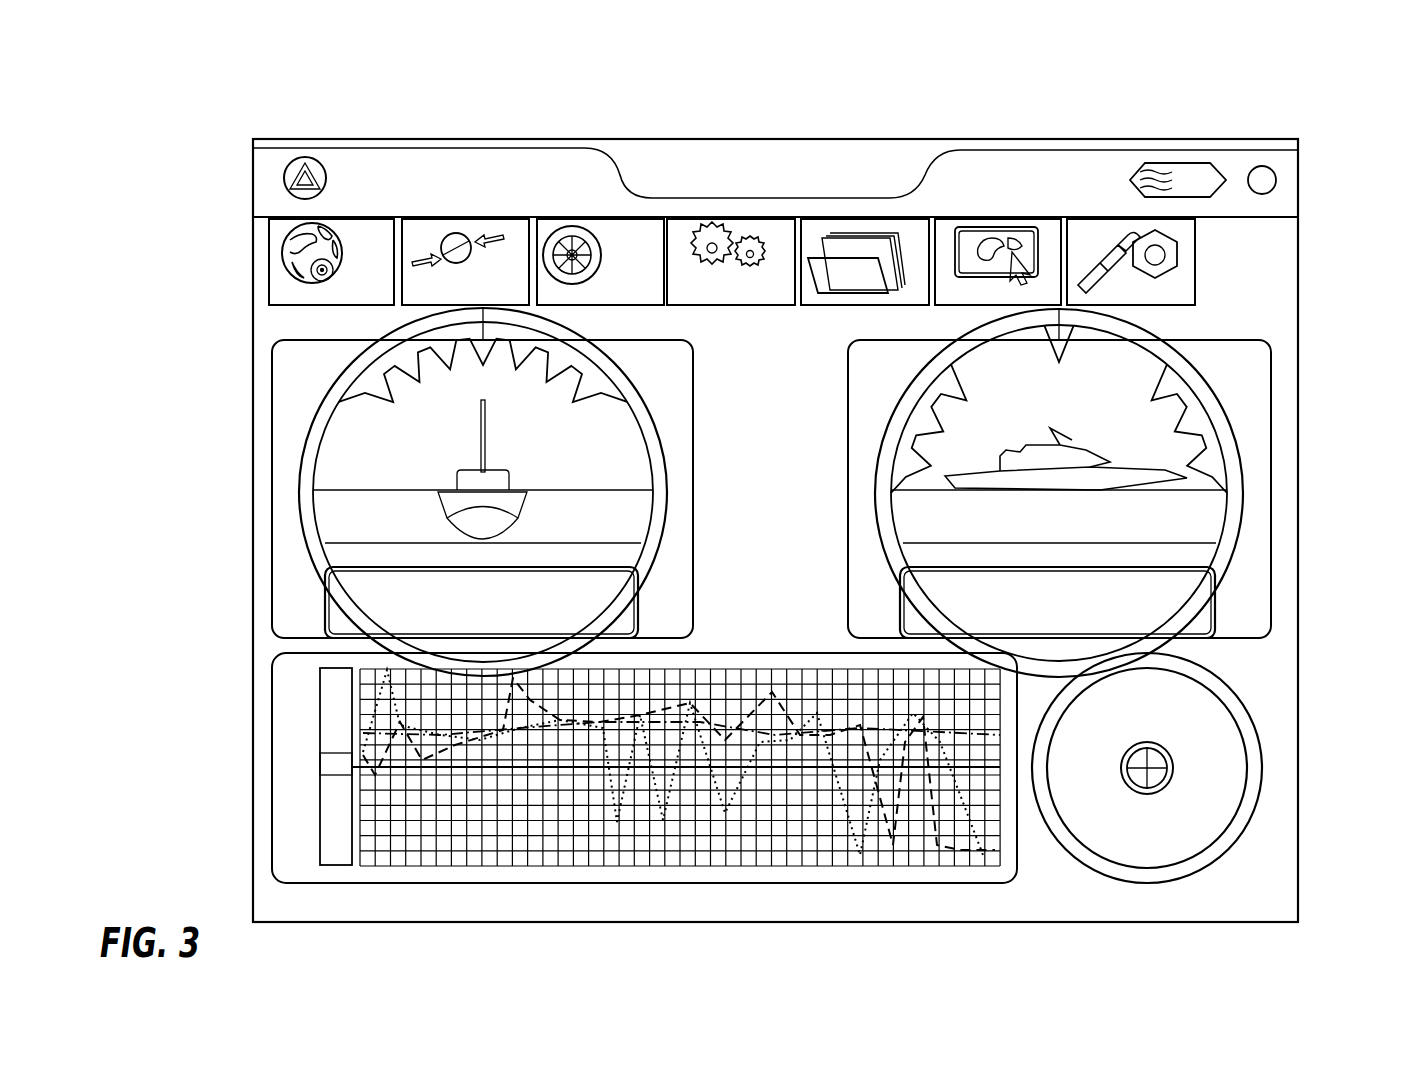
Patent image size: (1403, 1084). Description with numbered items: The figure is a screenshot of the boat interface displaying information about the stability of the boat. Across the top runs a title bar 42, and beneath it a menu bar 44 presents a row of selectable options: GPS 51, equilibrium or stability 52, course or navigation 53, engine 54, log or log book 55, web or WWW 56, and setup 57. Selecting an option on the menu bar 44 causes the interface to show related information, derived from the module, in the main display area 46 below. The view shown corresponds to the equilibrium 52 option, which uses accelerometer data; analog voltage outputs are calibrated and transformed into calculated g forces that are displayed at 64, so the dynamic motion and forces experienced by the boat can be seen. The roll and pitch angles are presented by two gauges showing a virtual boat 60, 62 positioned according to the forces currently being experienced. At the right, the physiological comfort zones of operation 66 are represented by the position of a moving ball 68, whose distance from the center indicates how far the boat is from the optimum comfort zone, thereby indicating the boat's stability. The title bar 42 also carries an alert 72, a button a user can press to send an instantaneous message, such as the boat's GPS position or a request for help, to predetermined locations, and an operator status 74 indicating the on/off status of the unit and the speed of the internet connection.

The title bar 42 is at (1292, 178).
The menu bar 44 is at (1212, 265).
The main display area 46 is at (1270, 666).
The GPS option 51 is at (280, 258).
The equilibrium or stability option 52 is at (484, 238).
The course or navigation option 53 is at (598, 235).
The engine option 54 is at (690, 230).
The log or log book option 55 is at (872, 235).
The web or WWW option 56 is at (995, 232).
The setup option 57 is at (1090, 232).
The virtual boat roll angle display 60 is at (322, 450).
The virtual boat pitch angle display 62 is at (1248, 495).
The calculated g forces display 64 is at (300, 740).
The physiological comfort zones of operation 66 is at (1217, 780).
The moving ball 68 is at (1155, 773).
The alert 72 is at (300, 168).
The operator status 74 is at (1256, 169).